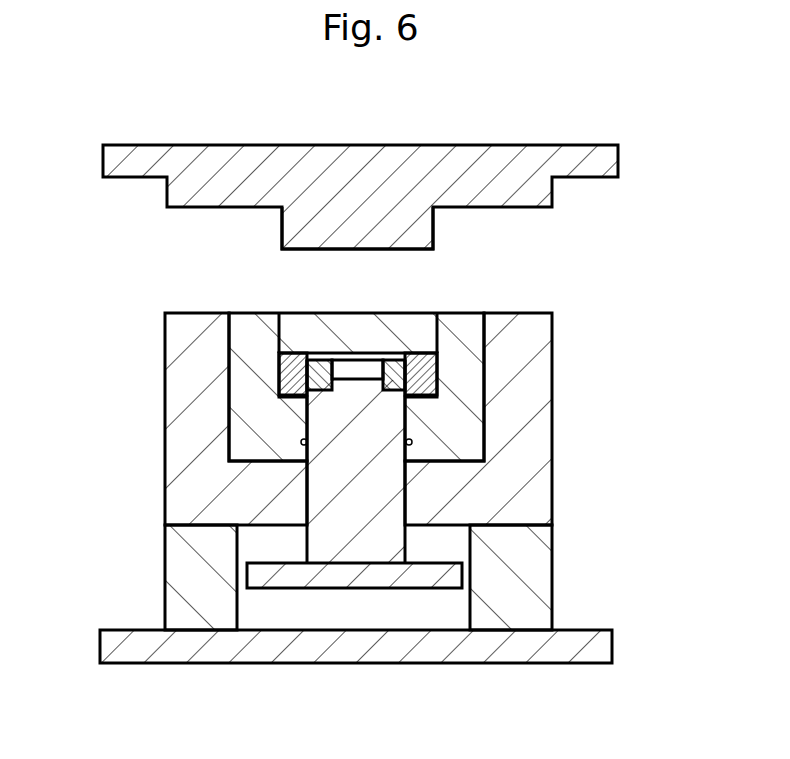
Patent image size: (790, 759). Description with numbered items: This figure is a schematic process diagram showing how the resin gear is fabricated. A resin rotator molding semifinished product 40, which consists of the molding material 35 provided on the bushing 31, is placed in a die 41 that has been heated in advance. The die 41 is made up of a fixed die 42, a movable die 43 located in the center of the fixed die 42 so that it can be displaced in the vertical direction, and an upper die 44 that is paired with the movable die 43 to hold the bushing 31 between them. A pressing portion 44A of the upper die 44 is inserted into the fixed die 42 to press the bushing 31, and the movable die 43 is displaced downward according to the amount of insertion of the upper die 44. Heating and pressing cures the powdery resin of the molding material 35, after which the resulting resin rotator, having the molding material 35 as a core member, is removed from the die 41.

The bushing 31 is at (397, 358).
The molding material 35 is at (437, 377).
The resin rotator molding semifinished product 40 is at (431, 348).
The die 41 is at (568, 334).
The fixed die 42 is at (473, 433).
The movable die 43 is at (358, 540).
The upper die 44 is at (415, 163).
The pressing portion 44A is at (310, 225).